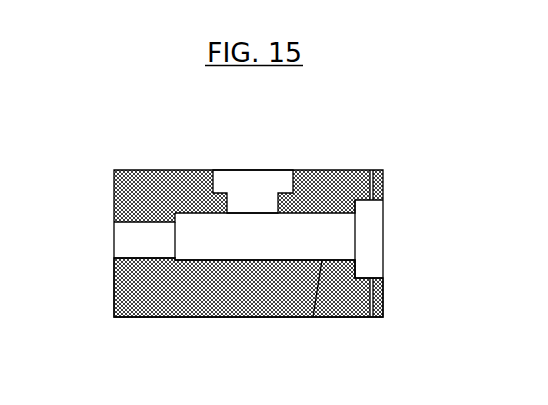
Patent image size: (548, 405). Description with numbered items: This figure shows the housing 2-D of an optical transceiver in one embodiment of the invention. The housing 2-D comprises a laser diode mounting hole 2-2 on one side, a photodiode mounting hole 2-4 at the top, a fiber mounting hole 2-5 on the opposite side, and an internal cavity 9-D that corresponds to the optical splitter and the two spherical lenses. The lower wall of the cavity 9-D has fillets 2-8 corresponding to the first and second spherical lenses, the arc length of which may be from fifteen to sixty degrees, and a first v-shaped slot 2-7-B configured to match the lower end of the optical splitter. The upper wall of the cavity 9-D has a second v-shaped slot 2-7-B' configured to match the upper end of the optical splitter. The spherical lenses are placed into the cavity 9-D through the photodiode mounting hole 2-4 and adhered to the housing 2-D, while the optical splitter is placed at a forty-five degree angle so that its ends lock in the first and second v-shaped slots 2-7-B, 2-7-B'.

The housing 2-D is at (122, 206).
The photodiode mounting hole 2-4 is at (272, 185).
The internal cavity 9-D is at (255, 242).
The second v-shaped slot 2-7-B' is at (376, 219).
The laser diode mounting hole 2-2 is at (449, 233).
The fiber mounting hole 2-5 is at (130, 238).
The first v-shaped slot 2-7-B is at (248, 307).
The fillets 2-8 is at (313, 317).